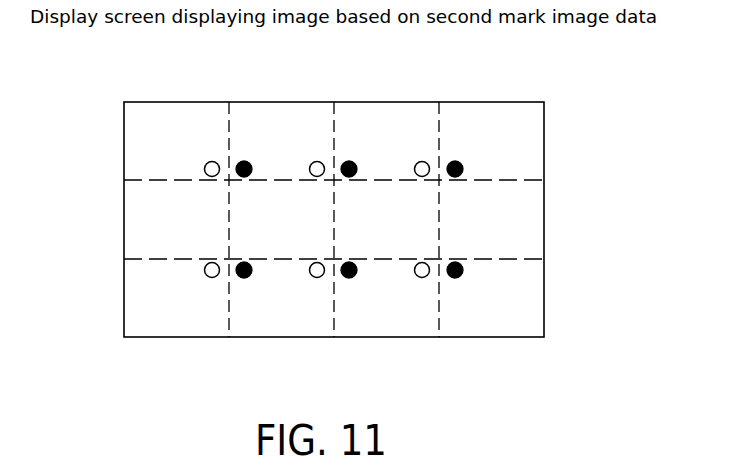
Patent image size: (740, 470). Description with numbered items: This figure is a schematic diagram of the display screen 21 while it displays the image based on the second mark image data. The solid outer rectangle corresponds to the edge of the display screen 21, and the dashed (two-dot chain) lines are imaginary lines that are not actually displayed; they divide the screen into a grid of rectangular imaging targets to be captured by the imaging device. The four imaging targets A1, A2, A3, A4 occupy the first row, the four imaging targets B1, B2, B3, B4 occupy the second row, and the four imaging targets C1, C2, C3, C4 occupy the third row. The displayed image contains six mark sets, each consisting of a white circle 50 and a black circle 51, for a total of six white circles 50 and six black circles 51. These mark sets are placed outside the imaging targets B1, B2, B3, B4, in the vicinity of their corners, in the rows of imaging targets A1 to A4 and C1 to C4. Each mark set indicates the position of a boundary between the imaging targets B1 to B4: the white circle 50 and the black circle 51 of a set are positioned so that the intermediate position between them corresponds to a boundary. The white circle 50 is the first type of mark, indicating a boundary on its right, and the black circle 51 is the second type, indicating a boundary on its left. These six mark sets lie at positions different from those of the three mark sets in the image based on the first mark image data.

The display screen 21 is at (544, 147).
The white circle 50 is at (210, 161).
The black circle 51 is at (245, 160).
The imaging target A1 is at (168, 108).
The imaging target A2 is at (277, 108).
The imaging target A3 is at (380, 108).
The imaging target A4 is at (482, 108).
The imaging target B1 is at (137, 202).
The imaging target B2 is at (242, 250).
The imaging target B3 is at (420, 225).
The imaging target B4 is at (533, 247).
The imaging target C1 is at (177, 328).
The imaging target C2 is at (278, 328).
The imaging target C3 is at (380, 328).
The imaging target C4 is at (493, 328).